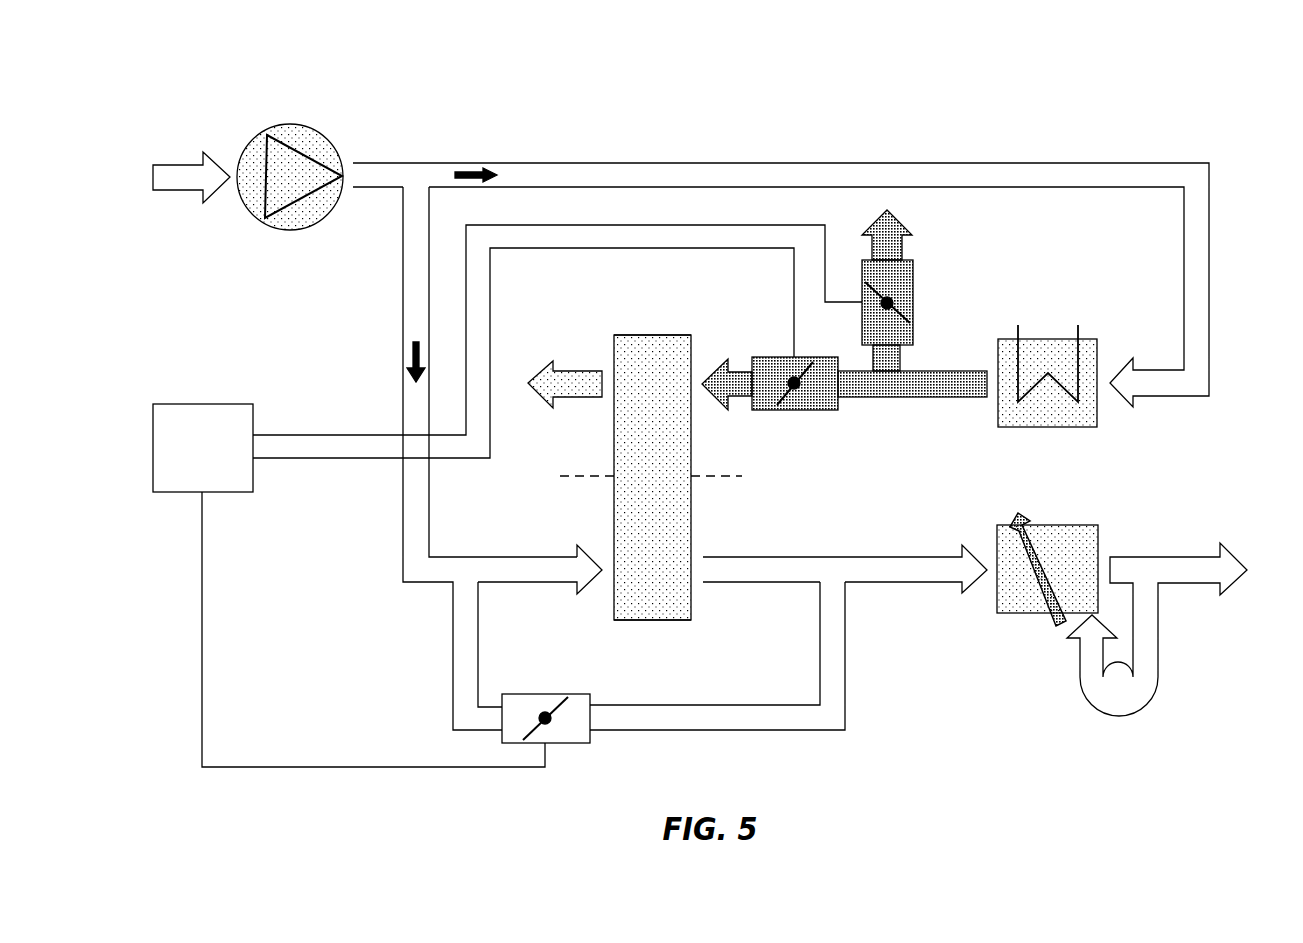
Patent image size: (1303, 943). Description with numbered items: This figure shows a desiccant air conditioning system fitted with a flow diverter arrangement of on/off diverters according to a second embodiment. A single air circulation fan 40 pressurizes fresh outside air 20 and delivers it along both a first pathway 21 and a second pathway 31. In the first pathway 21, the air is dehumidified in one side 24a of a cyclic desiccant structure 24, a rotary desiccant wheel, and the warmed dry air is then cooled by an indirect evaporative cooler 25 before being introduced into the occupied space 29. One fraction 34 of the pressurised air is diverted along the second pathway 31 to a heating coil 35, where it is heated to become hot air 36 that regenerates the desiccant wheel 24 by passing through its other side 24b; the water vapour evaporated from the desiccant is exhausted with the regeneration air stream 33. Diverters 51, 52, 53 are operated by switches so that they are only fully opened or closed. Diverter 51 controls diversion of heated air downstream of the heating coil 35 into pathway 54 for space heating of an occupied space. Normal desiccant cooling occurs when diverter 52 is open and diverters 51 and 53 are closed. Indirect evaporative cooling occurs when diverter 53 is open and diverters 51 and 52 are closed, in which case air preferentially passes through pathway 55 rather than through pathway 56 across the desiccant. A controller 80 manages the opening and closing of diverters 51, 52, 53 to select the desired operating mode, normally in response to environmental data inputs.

The fresh air 20 is at (172, 165).
The air circulation fan 40 is at (290, 125).
The second pathway 31 is at (465, 163).
The fraction of pressurised air 34 is at (1209, 275).
The first pathway 21 is at (403, 347).
The pathway 56 is at (525, 557).
The controller 80 is at (200, 404).
The cyclic desiccant structure 24 is at (691, 455).
The other side of desiccant wheel 24b is at (650, 335).
The one side of desiccant structure 24a is at (650, 620).
The regeneration air stream 33 is at (572, 371).
The diverter 52 is at (793, 412).
The hot air 36 is at (962, 397).
The diverter 51 is at (913, 300).
The pathway 54 is at (902, 243).
The heating coil 35 is at (1048, 339).
The indirect evaporative cooler 25 is at (1050, 615).
The occupied space 29 is at (1188, 557).
The diverter 53 is at (545, 694).
The pathway 55 is at (703, 705).